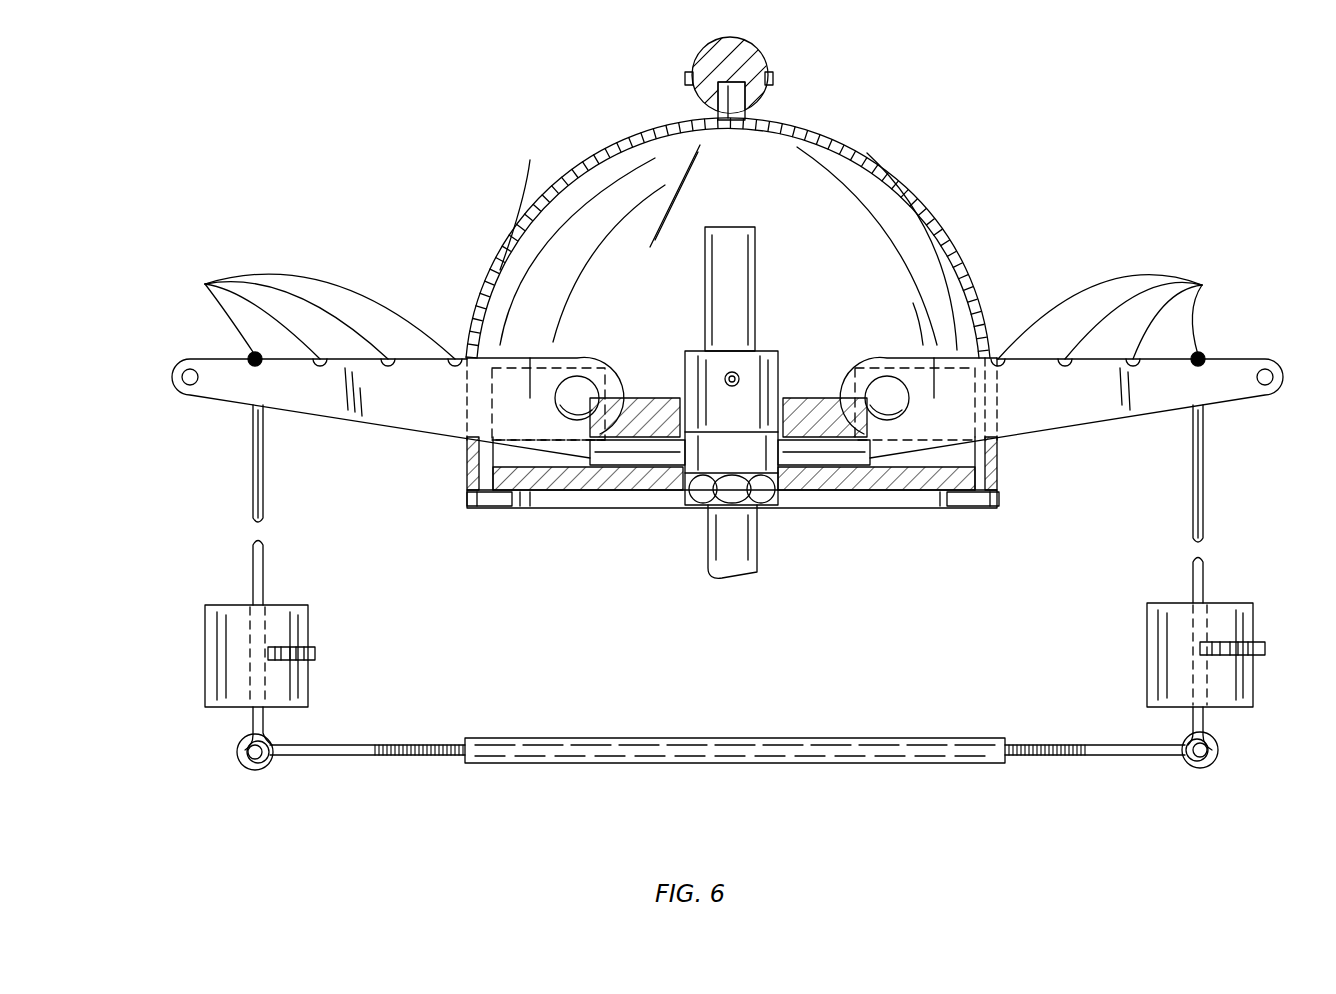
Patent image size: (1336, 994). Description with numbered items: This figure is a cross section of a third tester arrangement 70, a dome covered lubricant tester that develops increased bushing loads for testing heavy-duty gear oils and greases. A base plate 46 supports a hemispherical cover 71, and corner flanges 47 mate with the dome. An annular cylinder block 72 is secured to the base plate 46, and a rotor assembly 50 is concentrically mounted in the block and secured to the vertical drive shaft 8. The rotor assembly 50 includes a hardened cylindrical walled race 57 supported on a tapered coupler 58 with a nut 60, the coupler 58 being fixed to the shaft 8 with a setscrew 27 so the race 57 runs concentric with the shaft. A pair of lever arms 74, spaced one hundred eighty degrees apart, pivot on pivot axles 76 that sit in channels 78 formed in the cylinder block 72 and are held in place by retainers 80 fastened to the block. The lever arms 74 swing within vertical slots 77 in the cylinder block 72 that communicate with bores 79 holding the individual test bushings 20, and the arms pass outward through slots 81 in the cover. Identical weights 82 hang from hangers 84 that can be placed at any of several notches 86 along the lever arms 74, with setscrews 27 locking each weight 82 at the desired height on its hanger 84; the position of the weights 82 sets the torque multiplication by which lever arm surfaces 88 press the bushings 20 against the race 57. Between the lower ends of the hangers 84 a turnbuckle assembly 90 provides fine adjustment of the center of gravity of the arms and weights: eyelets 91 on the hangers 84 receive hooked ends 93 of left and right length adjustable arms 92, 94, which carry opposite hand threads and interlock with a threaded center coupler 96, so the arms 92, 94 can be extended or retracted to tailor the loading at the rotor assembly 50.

The drive shaft 8 is at (752, 228).
The sample support bushings 20 is at (632, 462).
The setscrew 27 is at (732, 372).
The base plate 46 is at (523, 507).
The corner flanges 47 is at (465, 498).
The rotor assembly 50 is at (681, 352).
The race 57 is at (780, 455).
The tapered coupler 58 is at (700, 350).
The nut 60 is at (773, 497).
The tester arrangement 70 is at (798, 273).
The hemispherical cover 71 is at (600, 150).
The annular cylinder block 72 is at (898, 505).
The lever arms 74 is at (676, 400).
The pivot axles 76 is at (578, 385).
The vertical slots 77 is at (467, 440).
The channels 78 is at (545, 352).
The bores 79 is at (605, 500).
The retainers 80 is at (612, 358).
The slots 81 is at (465, 462).
The weights 82 is at (308, 613).
The hangers 84 is at (264, 563).
The notches 86 is at (704, 318).
The lever arm surfaces 88 is at (575, 500).
The turnbuckle assembly 90 is at (374, 724).
The eyelets 91 is at (250, 768).
The left arm 92 is at (425, 744).
The hooked ends 93 is at (266, 760).
The right arm 94 is at (1043, 744).
The threaded center coupler 96 is at (682, 738).